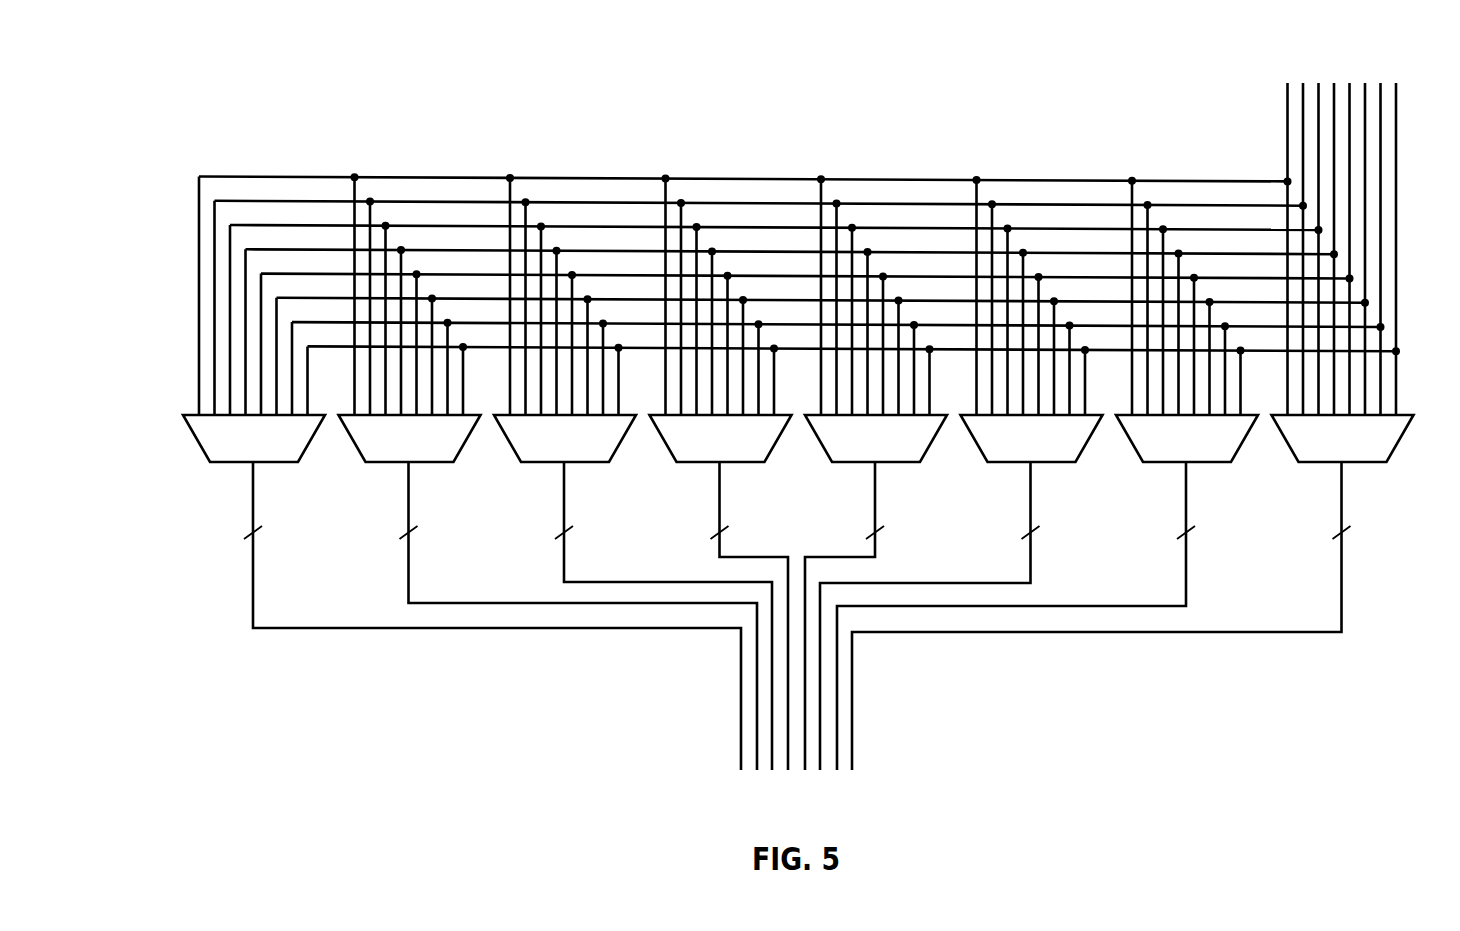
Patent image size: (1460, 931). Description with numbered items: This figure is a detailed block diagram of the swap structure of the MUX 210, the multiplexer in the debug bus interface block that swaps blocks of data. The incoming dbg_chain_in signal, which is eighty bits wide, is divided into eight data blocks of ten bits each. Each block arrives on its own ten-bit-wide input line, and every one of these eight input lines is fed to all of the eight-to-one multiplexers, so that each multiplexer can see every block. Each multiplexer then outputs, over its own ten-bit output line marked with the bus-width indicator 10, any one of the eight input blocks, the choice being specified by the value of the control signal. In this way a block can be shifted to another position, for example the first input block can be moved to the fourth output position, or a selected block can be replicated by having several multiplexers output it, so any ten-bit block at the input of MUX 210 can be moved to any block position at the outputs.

The MUX 210 is at (271, 54).
The bus width indicator (10 bits) 10 is at (811, 528).